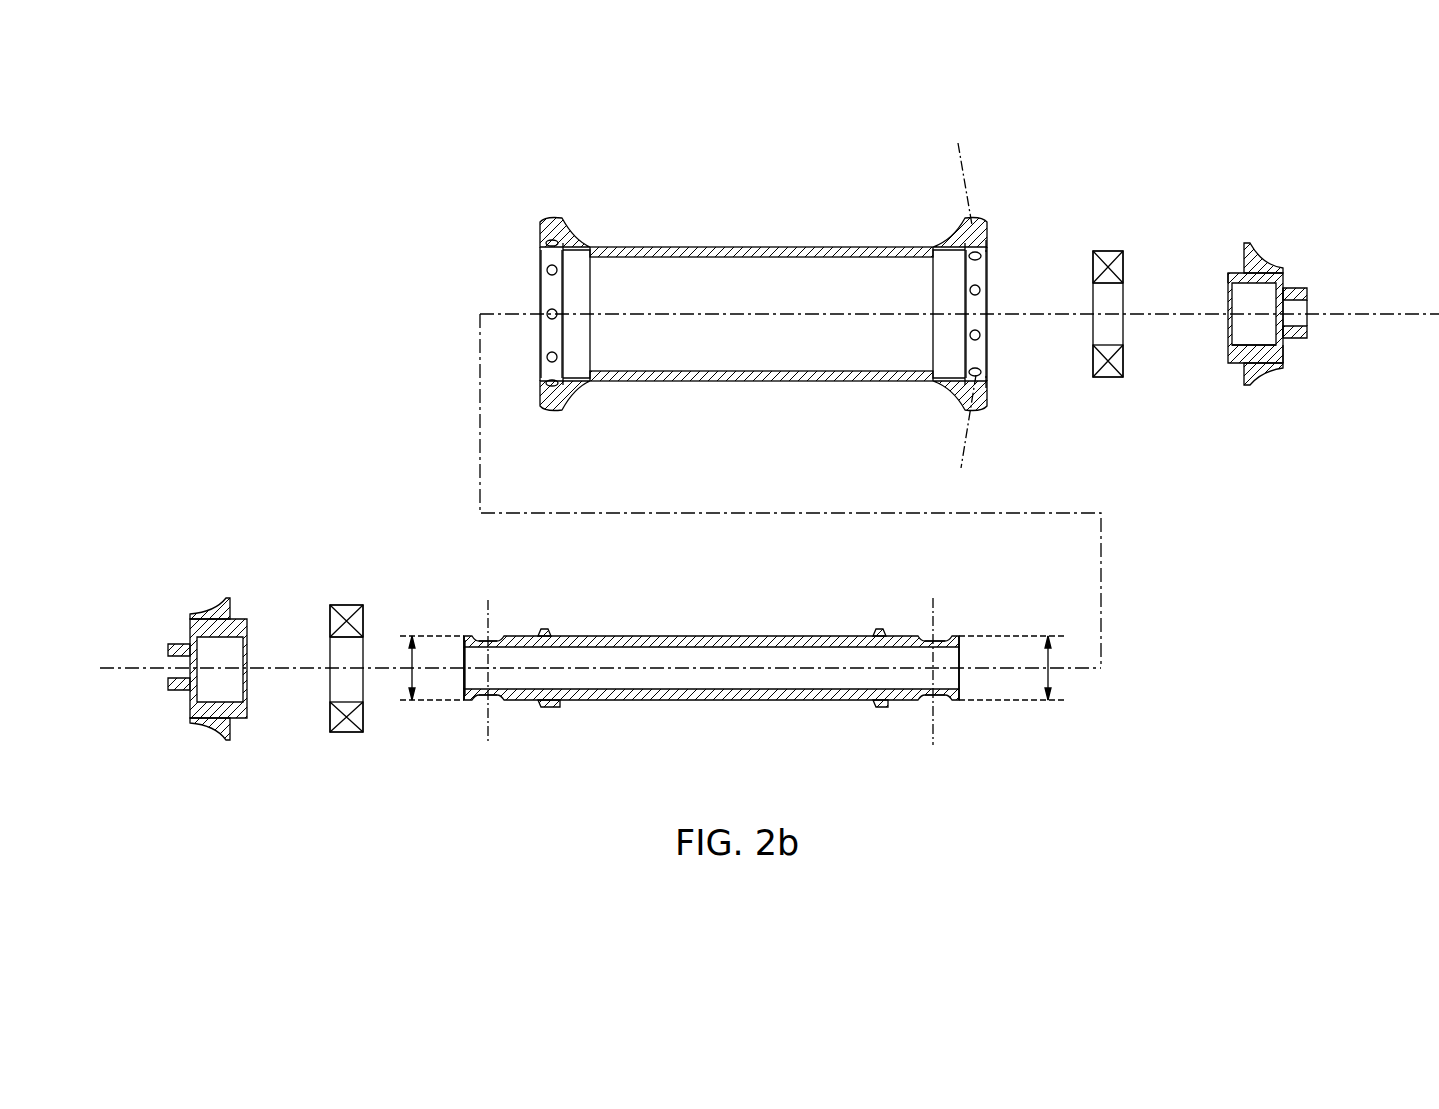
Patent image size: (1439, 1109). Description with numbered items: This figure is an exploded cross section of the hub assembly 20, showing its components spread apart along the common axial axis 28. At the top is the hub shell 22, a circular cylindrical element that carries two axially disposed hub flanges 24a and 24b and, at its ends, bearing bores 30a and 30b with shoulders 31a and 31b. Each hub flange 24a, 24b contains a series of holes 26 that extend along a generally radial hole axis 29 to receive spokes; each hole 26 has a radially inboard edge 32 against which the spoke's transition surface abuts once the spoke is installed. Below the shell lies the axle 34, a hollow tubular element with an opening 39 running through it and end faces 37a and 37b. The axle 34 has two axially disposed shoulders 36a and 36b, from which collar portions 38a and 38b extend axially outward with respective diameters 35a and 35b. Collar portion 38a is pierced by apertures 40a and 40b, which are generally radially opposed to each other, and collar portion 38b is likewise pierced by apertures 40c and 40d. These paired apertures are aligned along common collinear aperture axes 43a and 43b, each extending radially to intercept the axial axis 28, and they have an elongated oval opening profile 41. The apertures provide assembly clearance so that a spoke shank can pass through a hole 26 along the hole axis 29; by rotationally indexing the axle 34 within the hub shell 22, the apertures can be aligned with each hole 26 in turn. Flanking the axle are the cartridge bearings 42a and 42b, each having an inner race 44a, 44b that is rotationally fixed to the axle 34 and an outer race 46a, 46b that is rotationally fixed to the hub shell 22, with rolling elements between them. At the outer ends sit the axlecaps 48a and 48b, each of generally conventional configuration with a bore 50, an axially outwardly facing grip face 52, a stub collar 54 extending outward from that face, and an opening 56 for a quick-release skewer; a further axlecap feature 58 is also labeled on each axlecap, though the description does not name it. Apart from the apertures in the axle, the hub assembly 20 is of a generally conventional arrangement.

The hub assembly 20 is at (1345, 130).
The hub shell 22 is at (822, 247).
The hub flange 24a is at (556, 228).
The hub flange 24b is at (968, 222).
The holes 26 is at (552, 272).
The axial axis 28 is at (1366, 320).
The hole axis 29 is at (968, 158).
The bearing bore 30a is at (548, 240).
The bearing bore 30b is at (990, 262).
The shoulder 31a is at (578, 388).
The shoulder 31b is at (958, 392).
The radially inboard edge 32 is at (986, 245).
The axle 34 is at (716, 636).
The diameter 35a is at (412, 690).
The diameter 35b is at (1066, 700).
The shoulder 36a is at (542, 630).
The shoulder 36b is at (880, 630).
The end face 37a is at (470, 702).
The end face 37b is at (966, 702).
The collar portion 38a is at (545, 710).
The collar portion 38b is at (880, 710).
The opening 39 is at (462, 650).
The aperture 40a is at (489, 634).
The aperture 40b is at (489, 704).
The aperture 40c is at (938, 634).
The aperture 40d is at (940, 704).
The oval opening profile 41 is at (487, 632).
The bearing 42a is at (356, 610).
The bearing 42b is at (1110, 250).
The aperture axis 43a is at (478, 706).
The aperture axis 43b is at (938, 706).
The inner race 44a is at (345, 692).
The inner race 44b is at (1120, 335).
The outer race 46a is at (340, 612).
The outer race 46b is at (1105, 352).
The axlecap 48a is at (227, 606).
The axlecap 48b is at (1258, 262).
The bore 50 is at (1250, 345).
The grip face 52 is at (1292, 356).
The stub collar 54 is at (1298, 278).
The opening 56 is at (1308, 313).
The end cap shoulder 58 is at (1228, 278).